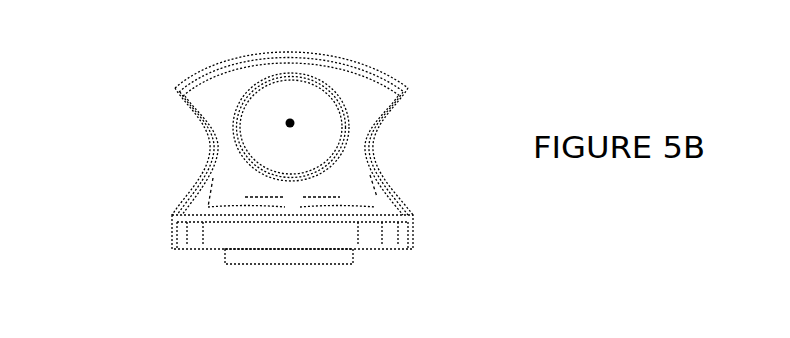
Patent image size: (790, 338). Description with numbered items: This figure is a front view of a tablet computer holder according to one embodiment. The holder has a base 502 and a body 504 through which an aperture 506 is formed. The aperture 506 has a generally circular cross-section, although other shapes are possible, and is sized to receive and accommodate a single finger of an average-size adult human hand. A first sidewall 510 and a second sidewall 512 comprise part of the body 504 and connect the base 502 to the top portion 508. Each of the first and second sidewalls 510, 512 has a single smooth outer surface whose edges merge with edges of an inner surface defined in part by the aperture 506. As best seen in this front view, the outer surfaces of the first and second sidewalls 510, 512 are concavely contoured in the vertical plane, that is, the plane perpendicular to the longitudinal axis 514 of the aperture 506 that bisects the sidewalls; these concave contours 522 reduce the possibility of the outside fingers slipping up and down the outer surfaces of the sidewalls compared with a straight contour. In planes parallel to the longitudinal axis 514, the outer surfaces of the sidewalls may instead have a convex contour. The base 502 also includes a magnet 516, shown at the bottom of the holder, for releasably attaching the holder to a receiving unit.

The base 502 is at (396, 232).
The body 504 is at (202, 199).
The aperture 506 is at (300, 97).
The top portion 508 is at (297, 46).
The first sidewall 510 is at (200, 147).
The second sidewall 512 is at (373, 148).
The longitudinal axis 514 is at (268, 123).
The magnet 516 is at (265, 273).
The concave contours 522 is at (178, 182).